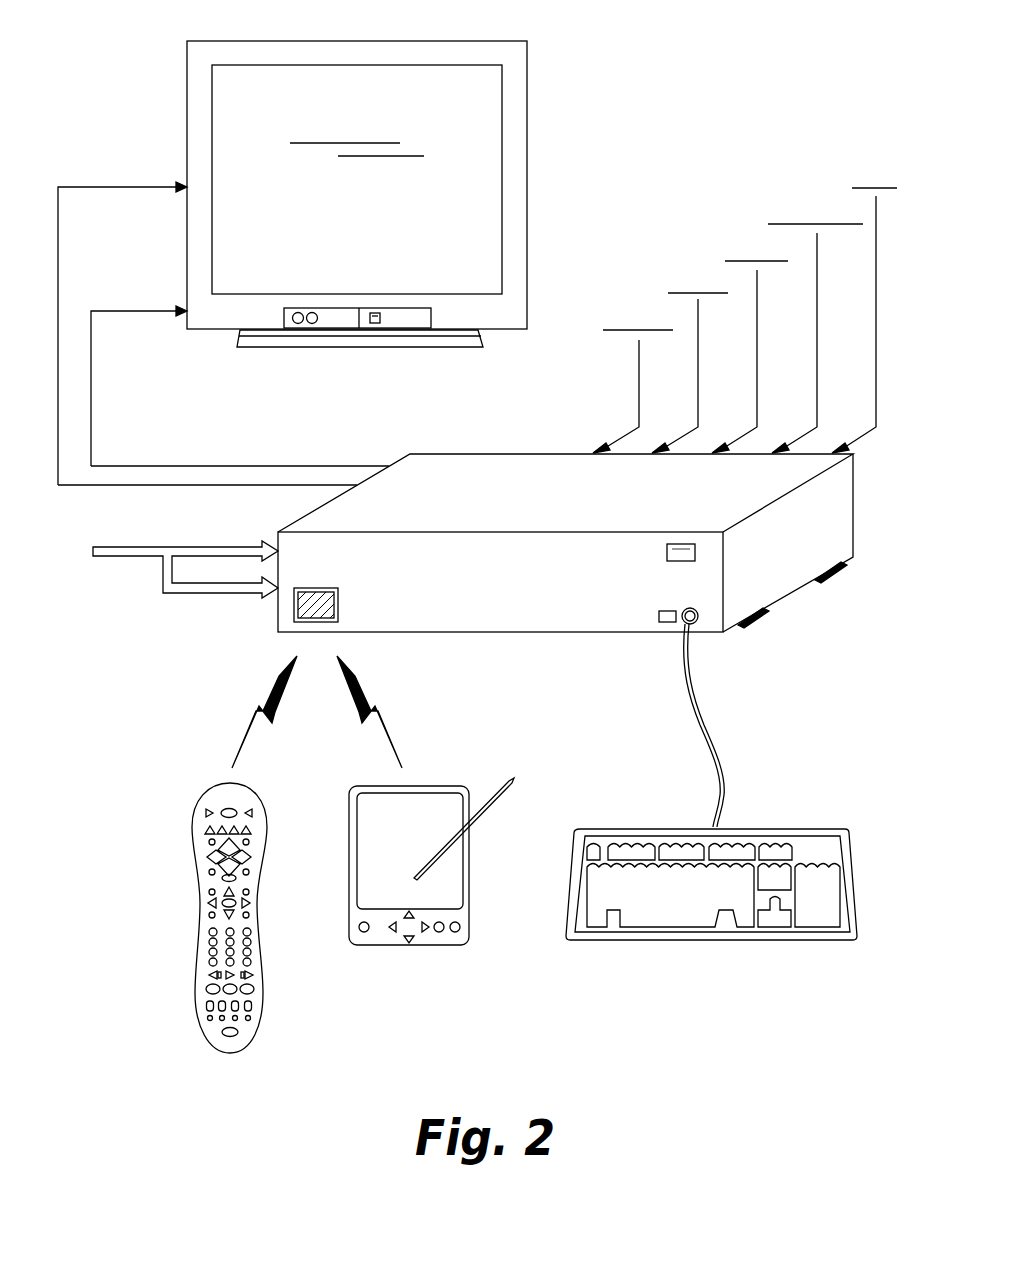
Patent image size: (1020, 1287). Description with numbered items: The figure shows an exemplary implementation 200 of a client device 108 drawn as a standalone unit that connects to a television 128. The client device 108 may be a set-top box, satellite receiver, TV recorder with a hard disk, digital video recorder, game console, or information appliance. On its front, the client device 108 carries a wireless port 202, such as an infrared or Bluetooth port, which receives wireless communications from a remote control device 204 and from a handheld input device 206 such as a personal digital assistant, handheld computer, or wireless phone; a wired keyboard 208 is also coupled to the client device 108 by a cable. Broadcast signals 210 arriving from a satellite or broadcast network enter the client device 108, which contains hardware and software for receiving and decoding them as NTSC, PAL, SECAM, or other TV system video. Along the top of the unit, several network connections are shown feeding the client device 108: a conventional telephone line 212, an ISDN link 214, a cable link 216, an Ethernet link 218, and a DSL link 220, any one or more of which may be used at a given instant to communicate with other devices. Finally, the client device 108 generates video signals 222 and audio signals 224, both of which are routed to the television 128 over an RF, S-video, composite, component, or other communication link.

The exemplary implementation 200 is at (650, 66).
The television 128 is at (475, 282).
The video signal(s) 222 is at (150, 220).
The audio signal(s) 224 is at (150, 345).
The client device 108 is at (470, 453).
The wireless port 202 is at (332, 586).
The broadcast signal(s) 210 is at (148, 558).
The conventional telephone line 212 is at (639, 292).
The ISDN link 214 is at (698, 255).
The cable link 216 is at (757, 223).
The Ethernet link 218 is at (817, 187).
The DSL link 220 is at (877, 152).
The remote control device 204 is at (193, 813).
The handheld input device 206 is at (427, 785).
The wired keyboard 208 is at (759, 827).